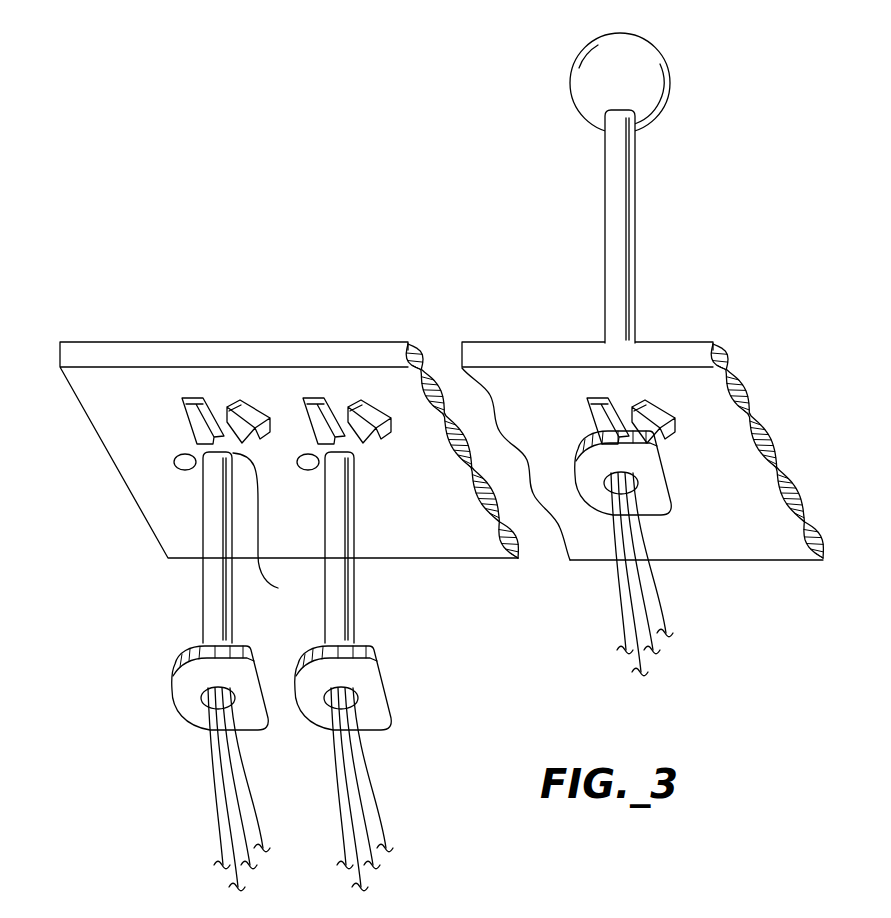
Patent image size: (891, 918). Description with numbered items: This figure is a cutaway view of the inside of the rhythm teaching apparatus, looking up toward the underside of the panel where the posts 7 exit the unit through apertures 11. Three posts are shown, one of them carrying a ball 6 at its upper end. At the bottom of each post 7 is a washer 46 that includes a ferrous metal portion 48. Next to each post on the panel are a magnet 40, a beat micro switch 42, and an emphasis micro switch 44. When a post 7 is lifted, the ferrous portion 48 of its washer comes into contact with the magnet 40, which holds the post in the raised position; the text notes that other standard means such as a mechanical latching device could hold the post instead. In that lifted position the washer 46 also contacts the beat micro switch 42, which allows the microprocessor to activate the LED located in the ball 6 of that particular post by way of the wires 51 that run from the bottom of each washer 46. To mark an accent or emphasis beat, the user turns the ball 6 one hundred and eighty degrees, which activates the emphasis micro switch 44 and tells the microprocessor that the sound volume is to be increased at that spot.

The ball 6 is at (668, 108).
The post 7 is at (210, 573).
The aperture 11 is at (271, 528).
The magnet 40 is at (184, 472).
The beat micro switch 42 is at (197, 430).
The emphasis micro switch 44 is at (237, 400).
The washer 46 is at (182, 705).
The ferrous metal portion 48 is at (178, 662).
The wires 51 is at (215, 815).